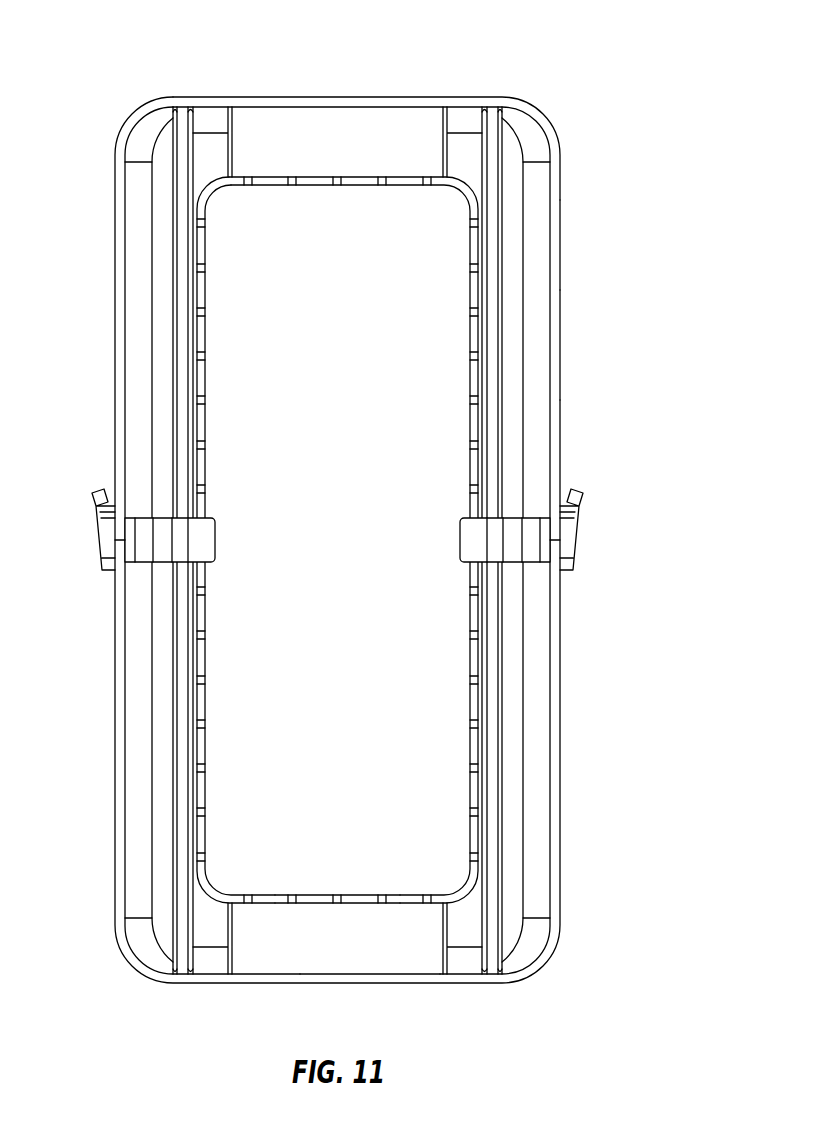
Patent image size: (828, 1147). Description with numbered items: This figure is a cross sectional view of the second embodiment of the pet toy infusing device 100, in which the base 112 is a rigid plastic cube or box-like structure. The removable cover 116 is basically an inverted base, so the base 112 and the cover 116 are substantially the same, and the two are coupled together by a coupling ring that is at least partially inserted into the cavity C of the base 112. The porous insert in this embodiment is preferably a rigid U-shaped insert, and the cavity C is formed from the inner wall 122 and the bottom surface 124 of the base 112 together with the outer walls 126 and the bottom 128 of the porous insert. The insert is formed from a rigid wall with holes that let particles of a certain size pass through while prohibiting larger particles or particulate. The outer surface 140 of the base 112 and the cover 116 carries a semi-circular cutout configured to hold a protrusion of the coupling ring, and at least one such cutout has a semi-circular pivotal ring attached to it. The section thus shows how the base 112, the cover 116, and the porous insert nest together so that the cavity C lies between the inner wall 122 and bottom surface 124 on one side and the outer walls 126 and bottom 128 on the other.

The pet toy infusing device 100 is at (570, 68).
The base 112 is at (560, 813).
The removable cover 116 is at (560, 248).
The outer surface 140 is at (560, 327).
The cavity C is at (534, 432).
The inner wall 122 is at (553, 650).
The bottom surface 124 is at (400, 969).
The outer walls 126 is at (470, 730).
The bottom 128 is at (305, 893).